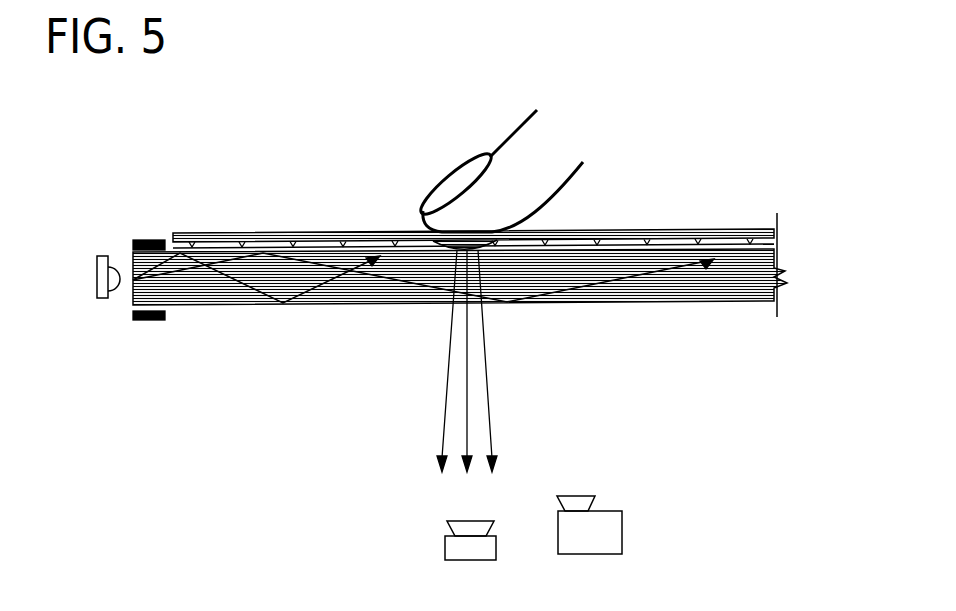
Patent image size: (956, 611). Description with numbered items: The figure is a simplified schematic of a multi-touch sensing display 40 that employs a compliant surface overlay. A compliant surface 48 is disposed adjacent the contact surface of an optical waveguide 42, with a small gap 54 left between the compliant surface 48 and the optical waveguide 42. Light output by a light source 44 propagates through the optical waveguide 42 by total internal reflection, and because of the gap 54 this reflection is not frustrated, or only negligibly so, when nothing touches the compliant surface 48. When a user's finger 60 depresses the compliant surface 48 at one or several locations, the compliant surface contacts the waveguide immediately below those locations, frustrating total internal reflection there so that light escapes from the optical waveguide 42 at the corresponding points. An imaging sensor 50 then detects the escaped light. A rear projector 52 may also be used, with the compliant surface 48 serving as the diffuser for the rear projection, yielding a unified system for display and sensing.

The multi-touch sensing display 40 is at (748, 101).
The optical waveguide 42 is at (740, 272).
The light source 44 is at (103, 292).
The compliant surface overlay 48 is at (668, 231).
The imaging sensor 50 is at (458, 547).
The projector 52 is at (608, 525).
The gap 54 is at (717, 243).
The finger 60 is at (518, 157).